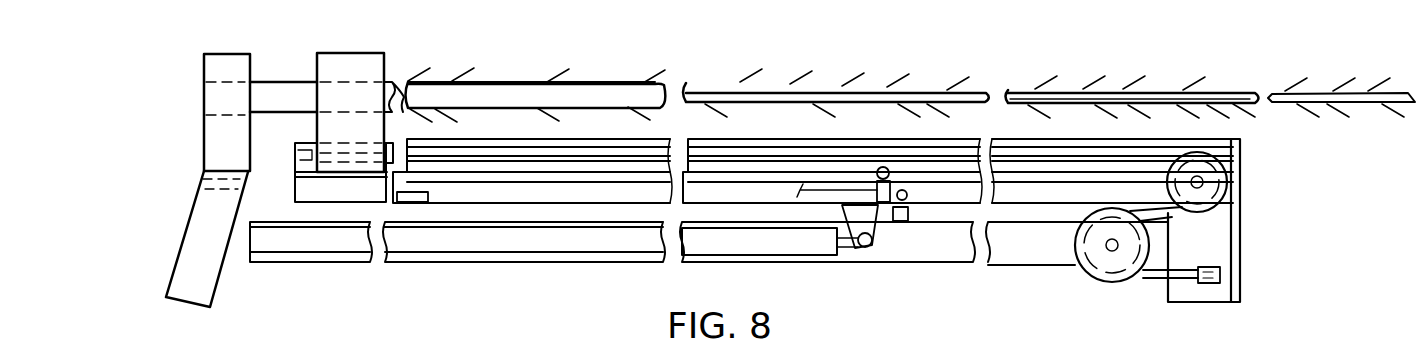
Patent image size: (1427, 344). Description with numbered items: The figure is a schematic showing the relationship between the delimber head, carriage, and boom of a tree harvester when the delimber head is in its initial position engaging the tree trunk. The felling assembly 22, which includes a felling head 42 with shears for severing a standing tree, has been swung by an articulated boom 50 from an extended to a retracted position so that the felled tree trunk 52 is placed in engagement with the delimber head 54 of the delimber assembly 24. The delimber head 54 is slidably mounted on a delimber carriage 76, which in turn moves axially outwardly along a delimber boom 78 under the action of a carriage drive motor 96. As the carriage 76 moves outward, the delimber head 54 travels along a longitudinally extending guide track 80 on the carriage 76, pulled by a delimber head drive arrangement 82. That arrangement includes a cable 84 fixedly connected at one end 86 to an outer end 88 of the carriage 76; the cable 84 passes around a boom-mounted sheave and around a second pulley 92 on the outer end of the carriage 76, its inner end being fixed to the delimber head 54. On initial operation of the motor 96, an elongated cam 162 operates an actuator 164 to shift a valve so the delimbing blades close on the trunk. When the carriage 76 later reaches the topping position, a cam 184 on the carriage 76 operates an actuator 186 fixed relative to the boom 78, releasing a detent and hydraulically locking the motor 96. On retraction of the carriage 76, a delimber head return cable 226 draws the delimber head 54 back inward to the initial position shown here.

The felling assembly 22 is at (140, 197).
The delimber assembly 24 is at (1350, 207).
The felling head 42 is at (230, 136).
The articulated boom 50 is at (205, 238).
The tree trunk 52 is at (283, 82).
The delimber head 54 is at (368, 67).
The delimber carriage 76 is at (518, 190).
The delimber boom 78 is at (957, 257).
The guide track 80 is at (610, 147).
The delimber head drive arrangement 82 is at (1137, 283).
The cable 84 is at (518, 150).
The one end of the cable 86 is at (1213, 285).
The outer end of the carriage 88 is at (1238, 243).
The second pulley 92 is at (1222, 181).
The carriage drive motor 96 is at (600, 247).
The elongated cam 162 is at (752, 178).
The actuator 164 is at (885, 205).
The actuator 186 is at (903, 222).
The cam 184 is at (410, 194).
The delimber head return cable 226 is at (312, 152).